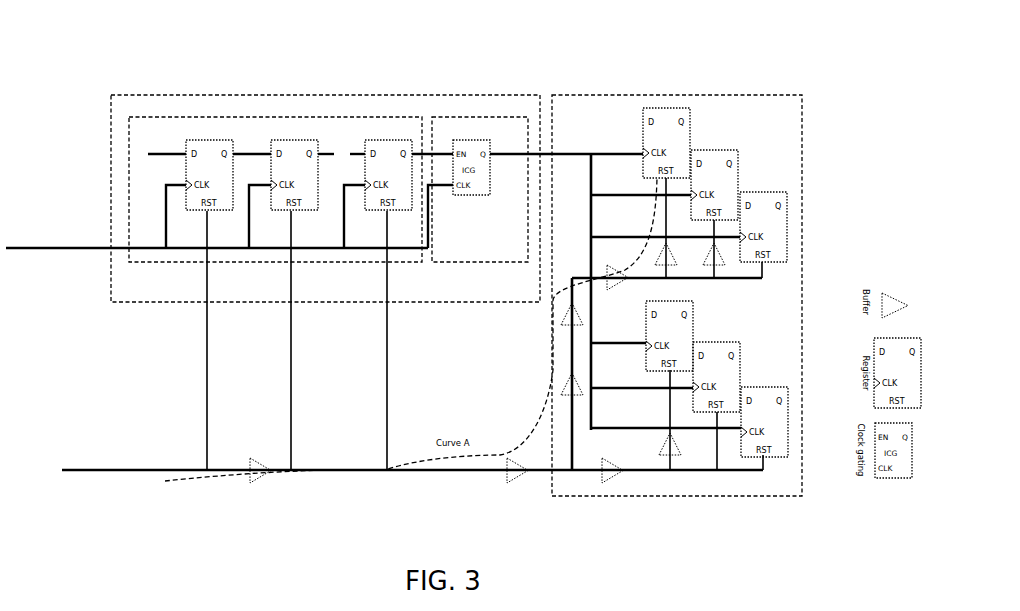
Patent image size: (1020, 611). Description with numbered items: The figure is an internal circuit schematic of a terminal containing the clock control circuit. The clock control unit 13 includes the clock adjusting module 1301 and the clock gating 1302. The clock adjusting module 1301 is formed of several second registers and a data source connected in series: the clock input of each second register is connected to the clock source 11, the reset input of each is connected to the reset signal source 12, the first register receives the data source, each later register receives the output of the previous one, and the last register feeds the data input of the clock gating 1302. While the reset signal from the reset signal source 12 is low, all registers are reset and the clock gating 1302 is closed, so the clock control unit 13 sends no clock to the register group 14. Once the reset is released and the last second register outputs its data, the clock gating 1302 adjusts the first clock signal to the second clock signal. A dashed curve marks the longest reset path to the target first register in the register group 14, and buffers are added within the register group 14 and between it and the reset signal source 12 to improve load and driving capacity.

The clock source 11 is at (217, 249).
The reset signal source 12 is at (396, 472).
The clock control unit 13 is at (325, 198).
The register group 14 is at (677, 295).
The clock adjusting module 1301 is at (291, 293).
The clock gating 1302 is at (478, 189).